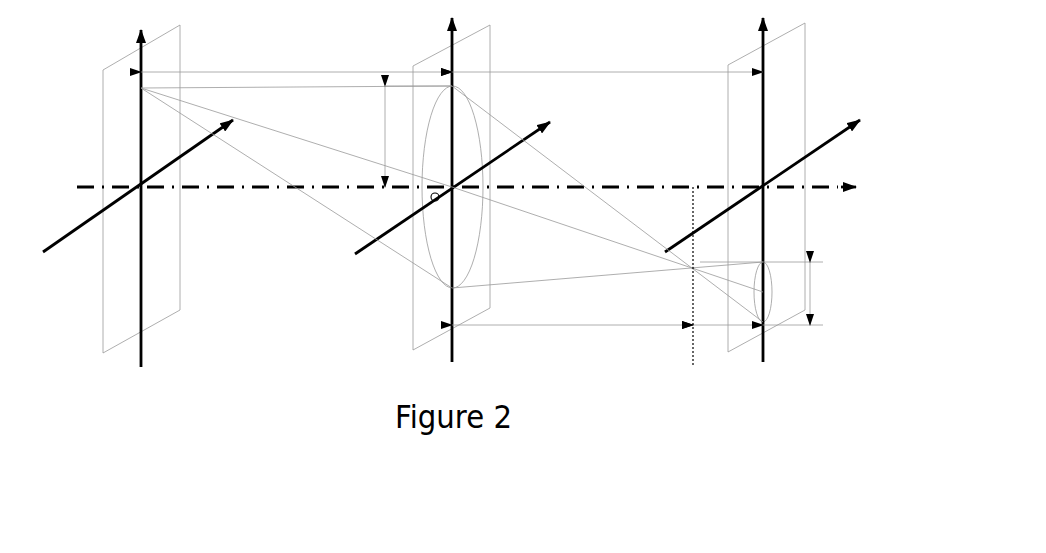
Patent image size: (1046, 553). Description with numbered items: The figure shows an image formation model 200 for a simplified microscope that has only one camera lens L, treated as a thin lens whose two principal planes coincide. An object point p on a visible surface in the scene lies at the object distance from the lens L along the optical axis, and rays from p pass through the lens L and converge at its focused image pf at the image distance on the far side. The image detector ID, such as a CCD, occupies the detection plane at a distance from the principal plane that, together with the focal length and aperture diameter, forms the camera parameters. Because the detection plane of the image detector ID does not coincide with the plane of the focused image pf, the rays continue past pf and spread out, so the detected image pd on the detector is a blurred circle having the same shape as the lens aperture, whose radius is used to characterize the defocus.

The image formation model 200 is at (451, 262).
The object point p is at (141, 189).
The camera lens L is at (451, 187).
The optical center O is at (435, 197).
The image detector ID is at (766, 179).
The focused image pf is at (702, 260).
The detected image pd is at (771, 292).